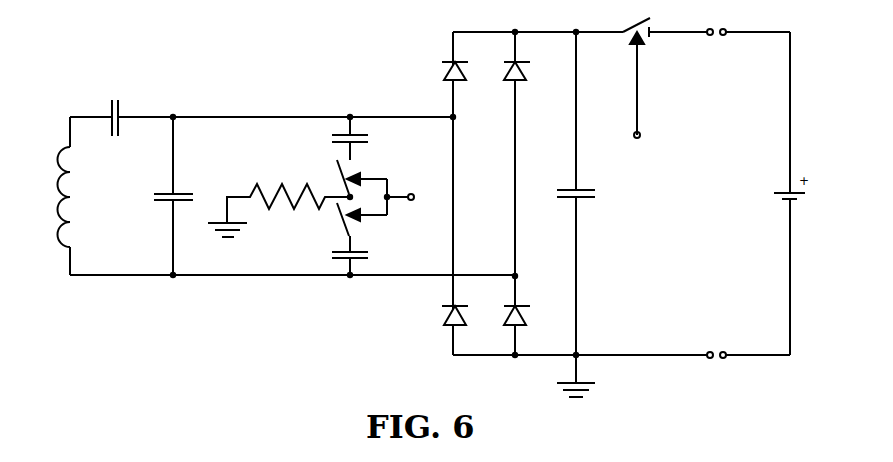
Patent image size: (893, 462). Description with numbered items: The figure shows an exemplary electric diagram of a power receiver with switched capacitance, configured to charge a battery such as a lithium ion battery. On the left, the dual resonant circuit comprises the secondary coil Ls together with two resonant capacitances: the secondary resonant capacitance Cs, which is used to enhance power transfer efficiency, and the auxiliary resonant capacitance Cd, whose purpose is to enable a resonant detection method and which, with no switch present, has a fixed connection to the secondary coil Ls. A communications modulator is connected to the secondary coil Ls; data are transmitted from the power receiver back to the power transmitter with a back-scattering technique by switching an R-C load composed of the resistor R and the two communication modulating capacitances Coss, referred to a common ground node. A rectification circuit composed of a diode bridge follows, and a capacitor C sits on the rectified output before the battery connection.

The secondary coil Ls is at (48, 197).
The secondary resonant capacitance Cs is at (114, 100).
The auxiliary resonant capacitance Cd is at (166, 196).
The resistor R is at (279, 199).
The communication modulating capacitances Coss is at (372, 196).
The filter capacitor C is at (572, 214).